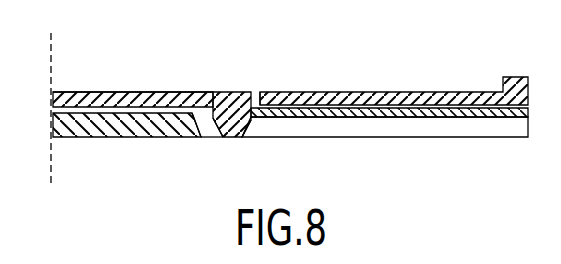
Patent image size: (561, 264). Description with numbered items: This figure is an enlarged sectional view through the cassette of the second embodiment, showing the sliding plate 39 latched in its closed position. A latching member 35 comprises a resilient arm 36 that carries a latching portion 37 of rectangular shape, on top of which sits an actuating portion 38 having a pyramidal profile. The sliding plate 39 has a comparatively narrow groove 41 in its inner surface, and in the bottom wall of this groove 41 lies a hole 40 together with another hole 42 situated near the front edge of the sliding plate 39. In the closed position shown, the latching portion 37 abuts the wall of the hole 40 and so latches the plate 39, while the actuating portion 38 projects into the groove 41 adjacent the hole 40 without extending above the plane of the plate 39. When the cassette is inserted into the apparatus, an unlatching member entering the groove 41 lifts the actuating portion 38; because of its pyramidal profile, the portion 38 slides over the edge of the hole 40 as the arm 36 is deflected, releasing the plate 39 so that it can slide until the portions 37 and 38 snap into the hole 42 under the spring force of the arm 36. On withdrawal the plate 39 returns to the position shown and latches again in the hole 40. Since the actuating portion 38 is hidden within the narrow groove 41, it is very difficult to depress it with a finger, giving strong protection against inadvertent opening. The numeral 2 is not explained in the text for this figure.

The substrate layer 2 is at (425, 100).
The latching member 35 is at (189, 86).
The resilient arm 36 is at (135, 97).
The latching portion 37 is at (233, 105).
The actuating portion 38 is at (240, 125).
The sliding plate 39 is at (132, 132).
The hole 40 is at (256, 108).
The groove 41 is at (342, 125).
The hole 42 is at (490, 113).